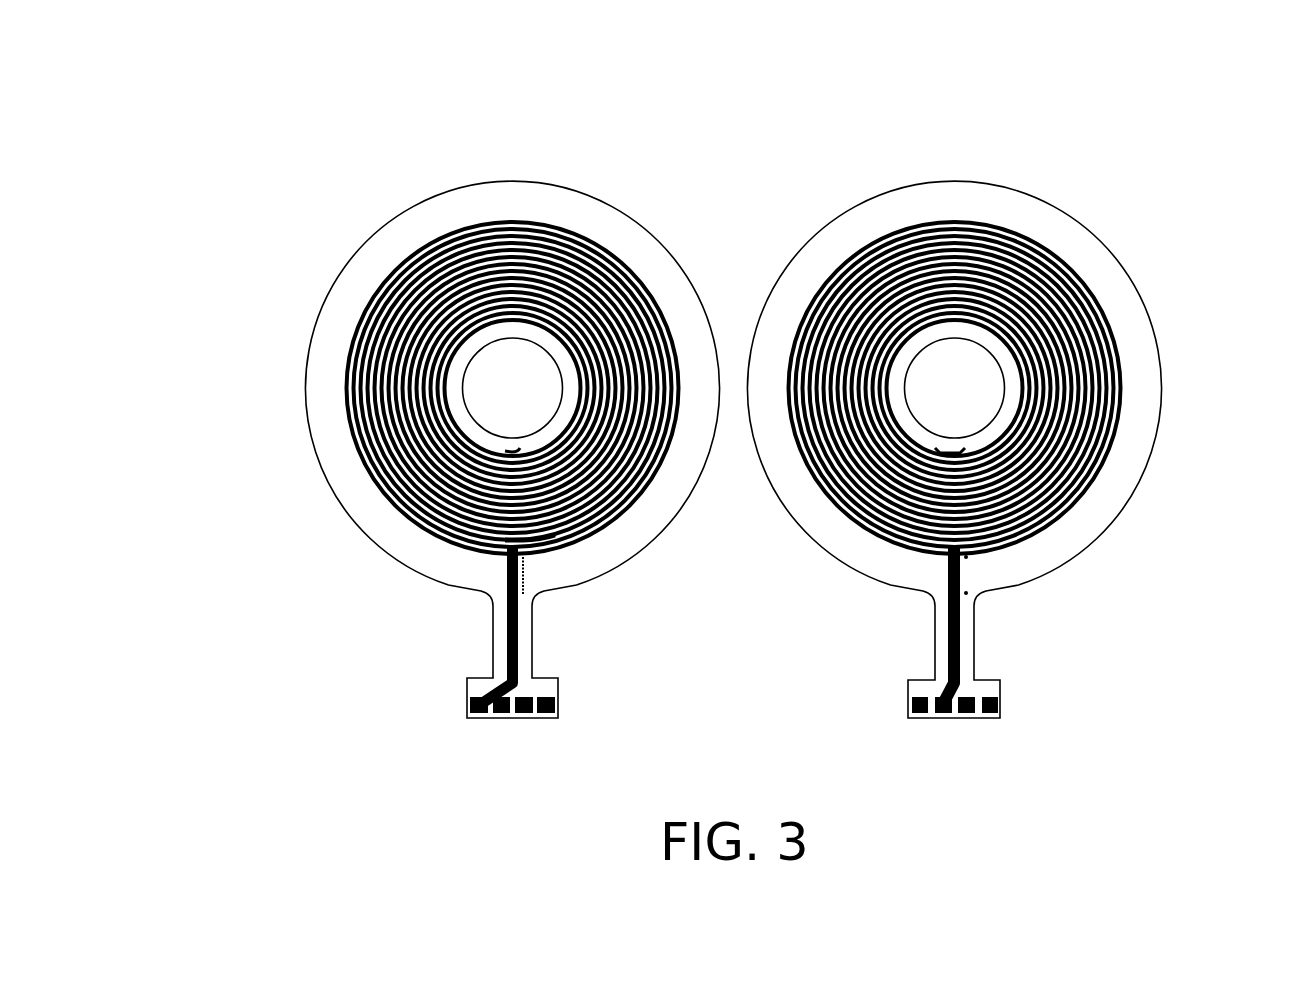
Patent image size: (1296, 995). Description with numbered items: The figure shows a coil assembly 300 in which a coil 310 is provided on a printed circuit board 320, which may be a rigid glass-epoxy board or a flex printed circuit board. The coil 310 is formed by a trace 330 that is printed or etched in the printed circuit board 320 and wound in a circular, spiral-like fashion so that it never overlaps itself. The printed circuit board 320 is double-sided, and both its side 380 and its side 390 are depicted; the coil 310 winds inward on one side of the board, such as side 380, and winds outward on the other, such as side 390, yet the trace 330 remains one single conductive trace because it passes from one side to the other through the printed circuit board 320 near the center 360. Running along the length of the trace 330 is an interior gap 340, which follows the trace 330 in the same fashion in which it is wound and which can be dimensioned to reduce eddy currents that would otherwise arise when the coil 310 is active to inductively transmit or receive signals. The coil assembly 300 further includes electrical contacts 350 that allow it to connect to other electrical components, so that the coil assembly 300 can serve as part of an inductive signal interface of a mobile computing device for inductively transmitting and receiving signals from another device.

The coil assembly 300 is at (1072, 103).
The coil 310 is at (623, 238).
The printed circuit board 320 is at (542, 173).
The trace 330 is at (502, 638).
The interior gap 340 is at (586, 544).
The electrical contacts 350 is at (1014, 708).
The center 360 is at (977, 389).
The side 380 is at (362, 196).
The side 390 is at (1120, 227).